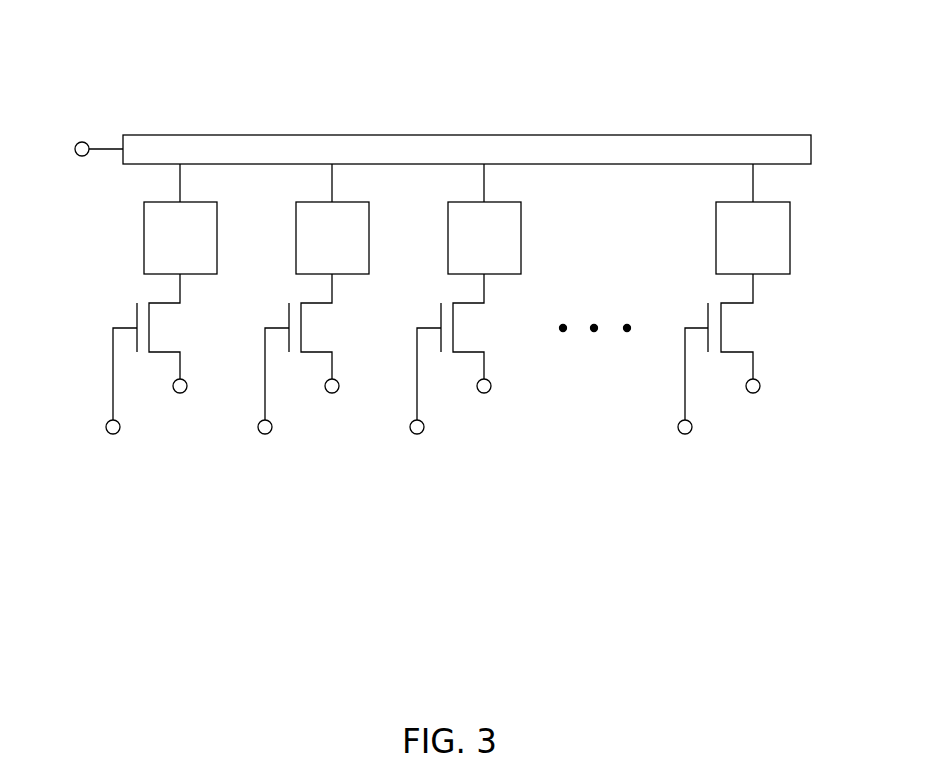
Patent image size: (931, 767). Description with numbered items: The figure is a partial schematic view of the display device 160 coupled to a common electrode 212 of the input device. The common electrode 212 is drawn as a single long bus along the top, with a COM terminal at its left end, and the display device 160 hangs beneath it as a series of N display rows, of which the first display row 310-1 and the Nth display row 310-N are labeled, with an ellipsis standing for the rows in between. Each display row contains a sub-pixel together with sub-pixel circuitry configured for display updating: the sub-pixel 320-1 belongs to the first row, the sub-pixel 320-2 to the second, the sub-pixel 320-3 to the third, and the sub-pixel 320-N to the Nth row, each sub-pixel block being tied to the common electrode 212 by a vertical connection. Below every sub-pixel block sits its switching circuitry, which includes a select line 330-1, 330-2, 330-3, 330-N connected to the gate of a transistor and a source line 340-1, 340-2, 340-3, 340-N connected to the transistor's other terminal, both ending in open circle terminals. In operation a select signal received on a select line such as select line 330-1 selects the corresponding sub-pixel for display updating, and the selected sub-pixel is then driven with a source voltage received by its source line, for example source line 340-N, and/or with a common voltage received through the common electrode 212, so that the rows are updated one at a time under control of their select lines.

The display device 160 is at (124, 505).
The common electrode 212 is at (408, 135).
The display row 310-1 is at (88, 235).
The display row 310-N is at (806, 235).
The sub-pixel 320-1 is at (151, 249).
The sub-pixel 320-2 is at (303, 249).
The sub-pixel 320-3 is at (455, 249).
The sub-pixel 320-N is at (722, 249).
The select line 330-1 is at (114, 442).
The select line 330-2 is at (266, 442).
The select line 330-3 is at (418, 442).
The select line 330-N is at (684, 442).
The source line 340-1 is at (181, 405).
The source line 340-2 is at (333, 405).
The source line 340-3 is at (485, 405).
The source line 340-N is at (752, 405).